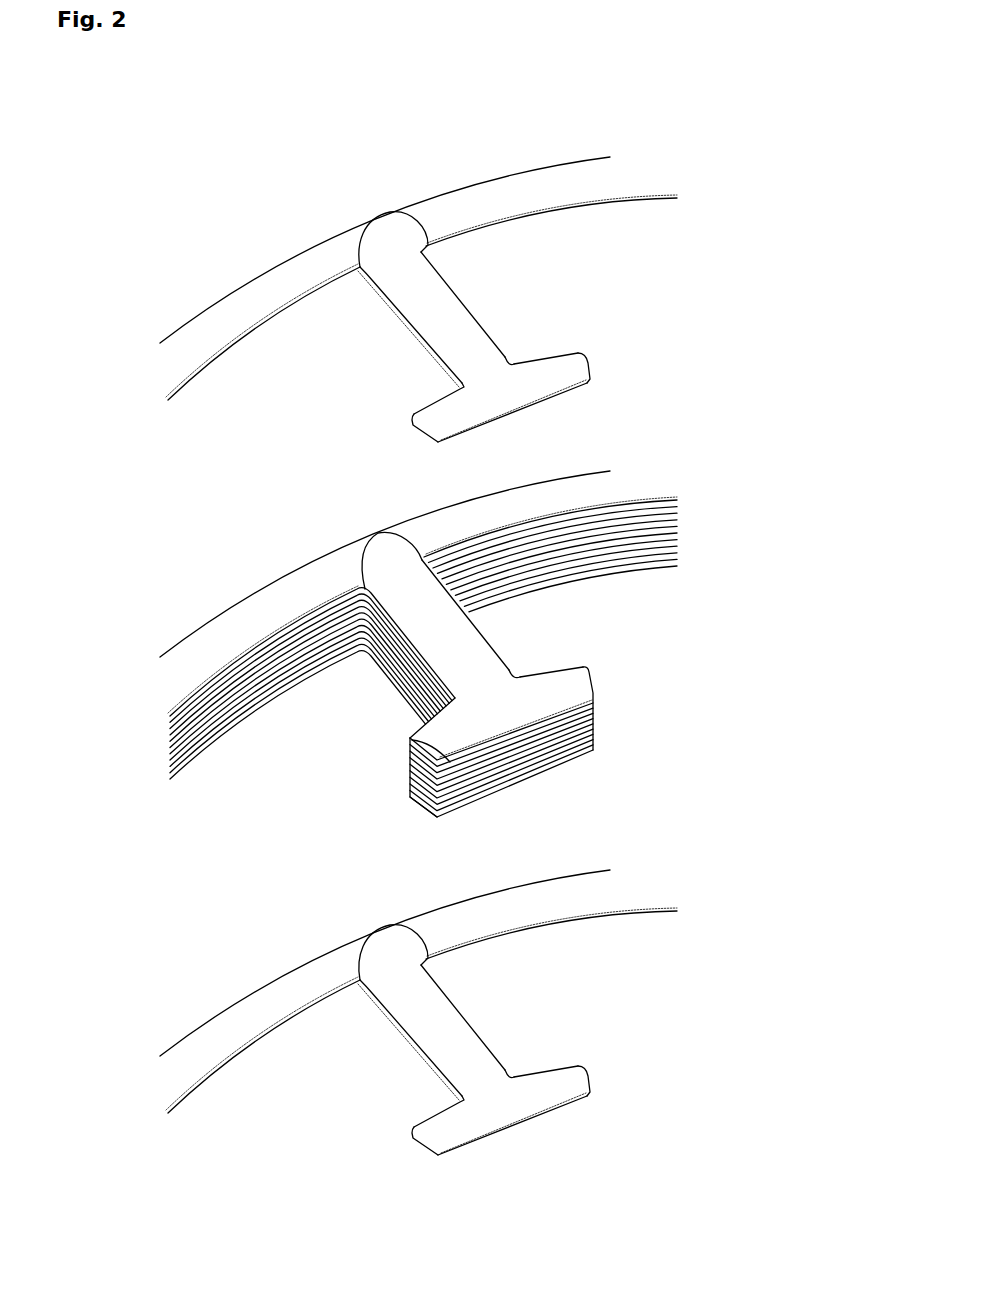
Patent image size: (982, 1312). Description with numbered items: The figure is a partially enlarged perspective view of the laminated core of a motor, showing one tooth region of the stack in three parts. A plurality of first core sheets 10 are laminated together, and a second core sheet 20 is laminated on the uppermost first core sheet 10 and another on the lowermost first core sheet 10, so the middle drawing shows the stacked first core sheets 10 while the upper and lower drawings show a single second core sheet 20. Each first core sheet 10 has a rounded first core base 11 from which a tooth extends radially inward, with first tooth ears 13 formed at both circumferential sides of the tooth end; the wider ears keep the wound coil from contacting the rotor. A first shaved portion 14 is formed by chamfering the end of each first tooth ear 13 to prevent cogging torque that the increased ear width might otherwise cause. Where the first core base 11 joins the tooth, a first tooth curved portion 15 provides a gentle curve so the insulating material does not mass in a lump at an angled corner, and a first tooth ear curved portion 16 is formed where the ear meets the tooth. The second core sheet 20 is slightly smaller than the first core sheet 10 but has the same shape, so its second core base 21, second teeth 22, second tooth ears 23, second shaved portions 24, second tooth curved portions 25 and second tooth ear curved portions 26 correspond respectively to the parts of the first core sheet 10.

The first core sheet 10 is at (209, 600).
The first core base 11 is at (290, 577).
The first tooth ear 13 is at (493, 720).
The first shaved portion 14 is at (590, 688).
The first tooth curved portion 15 is at (383, 533).
The first tooth ear curved portion 16 is at (456, 695).
The second core sheet 20 is at (211, 290).
The second core base 21 is at (303, 258).
The second tooth 22 is at (445, 300).
The second tooth ear 23 is at (530, 390).
The second shaved portion 24 is at (585, 387).
The second tooth curved portion 25 is at (358, 245).
The second tooth ear curved portion 26 is at (458, 376).